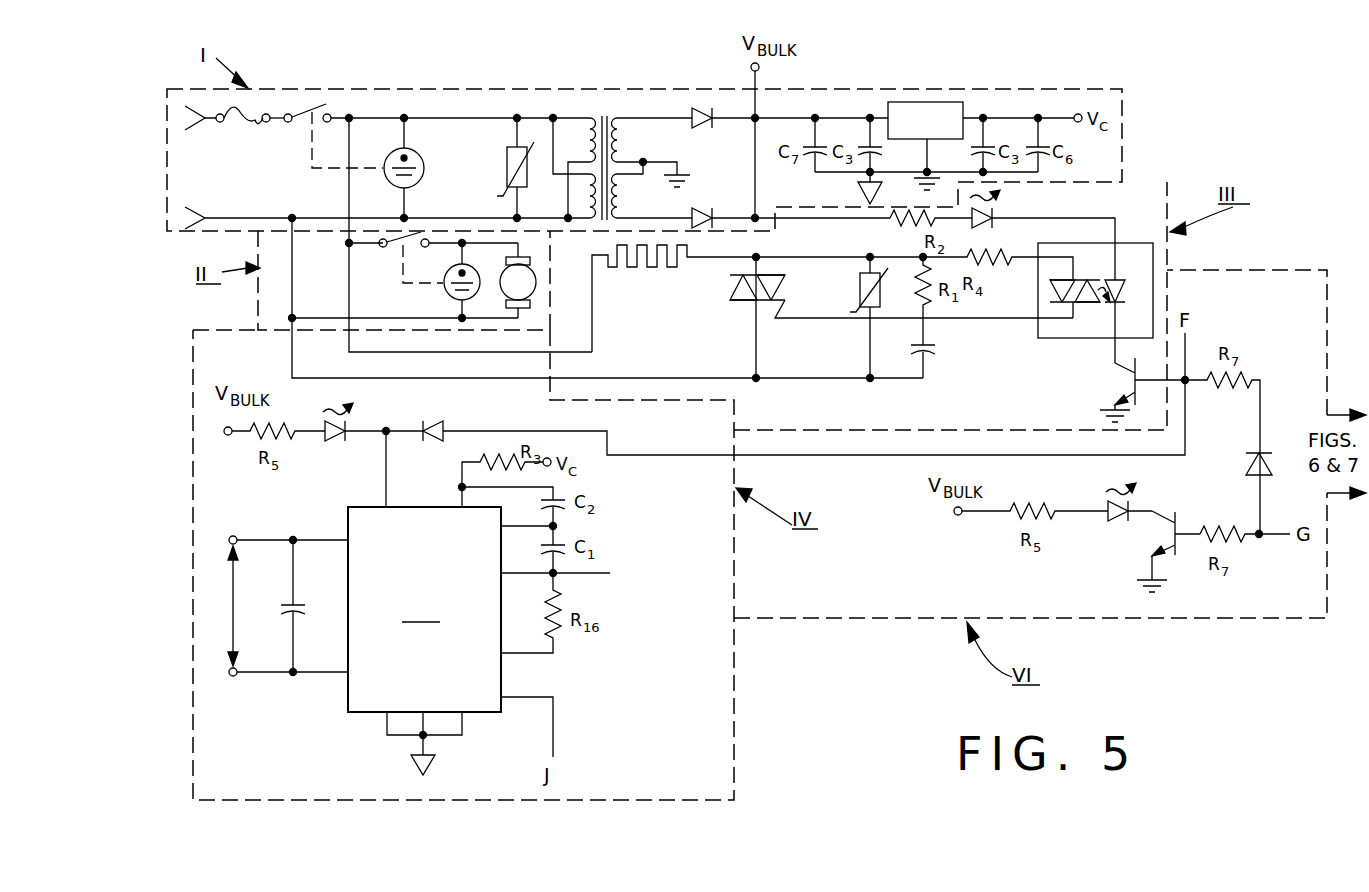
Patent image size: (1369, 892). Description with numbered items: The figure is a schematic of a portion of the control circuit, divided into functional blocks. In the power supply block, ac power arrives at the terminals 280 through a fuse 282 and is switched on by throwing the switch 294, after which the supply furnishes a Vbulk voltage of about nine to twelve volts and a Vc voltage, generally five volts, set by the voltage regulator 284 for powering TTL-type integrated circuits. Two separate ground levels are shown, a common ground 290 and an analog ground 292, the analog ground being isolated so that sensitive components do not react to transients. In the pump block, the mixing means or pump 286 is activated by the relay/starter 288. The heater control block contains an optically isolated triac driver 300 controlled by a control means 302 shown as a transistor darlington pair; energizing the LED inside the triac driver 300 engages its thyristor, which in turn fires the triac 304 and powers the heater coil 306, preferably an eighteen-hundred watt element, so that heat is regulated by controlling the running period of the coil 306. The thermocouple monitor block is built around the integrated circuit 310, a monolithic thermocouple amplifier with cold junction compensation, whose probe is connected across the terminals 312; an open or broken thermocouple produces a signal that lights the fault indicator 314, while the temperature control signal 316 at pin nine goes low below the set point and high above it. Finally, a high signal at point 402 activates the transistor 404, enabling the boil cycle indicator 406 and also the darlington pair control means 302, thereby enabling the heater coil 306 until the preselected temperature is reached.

The terminals 280 is at (220, 214).
The fuse 282 is at (276, 128).
The voltage regulator 284 is at (908, 102).
The pump 286 is at (536, 290).
The relay/starter 288 is at (444, 286).
The common ground 290 is at (680, 172).
The analog ground 292 is at (858, 181).
The switch 294 is at (308, 110).
The optically isolated triac driver 300 is at (1100, 340).
The control means 302 is at (1125, 377).
The triac 304 is at (736, 283).
The heater coil 306 is at (664, 270).
The integrated circuit 310 is at (424, 641).
The terminals 312 is at (248, 653).
The fault indicator 314 is at (334, 445).
The temperature control signal 316 is at (596, 580).
The point 402 is at (1260, 538).
The transistor 404 is at (1160, 512).
The boil cycle indicator 406 is at (1112, 531).